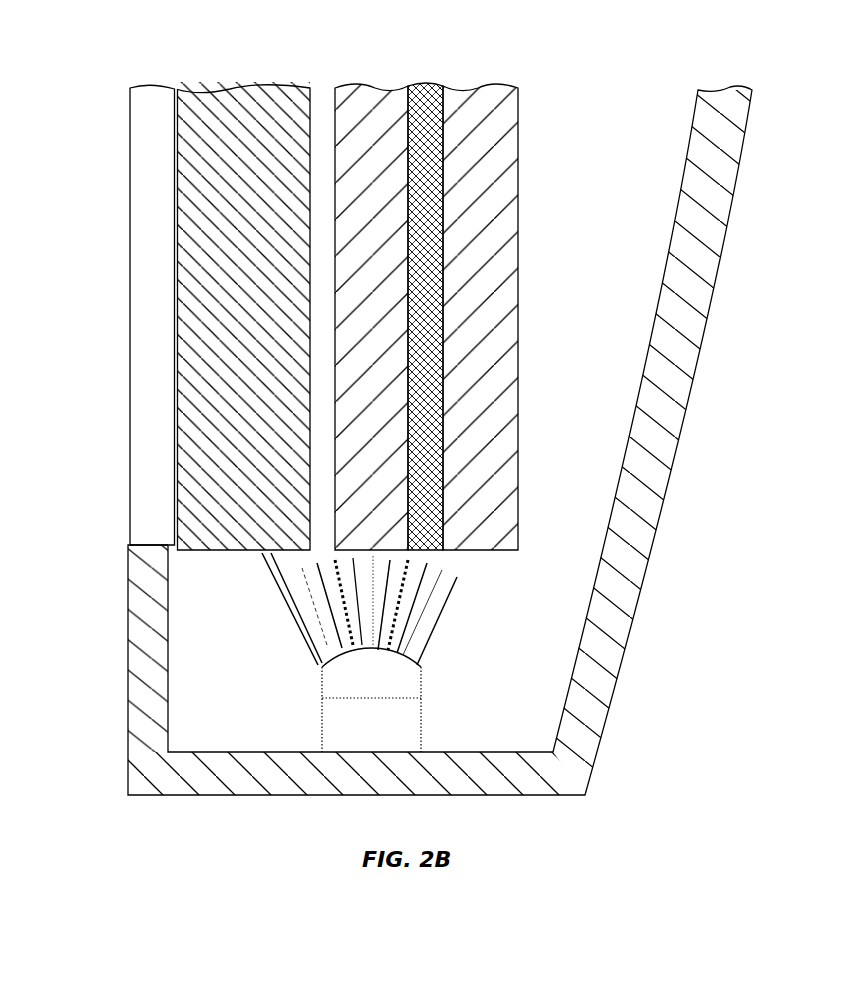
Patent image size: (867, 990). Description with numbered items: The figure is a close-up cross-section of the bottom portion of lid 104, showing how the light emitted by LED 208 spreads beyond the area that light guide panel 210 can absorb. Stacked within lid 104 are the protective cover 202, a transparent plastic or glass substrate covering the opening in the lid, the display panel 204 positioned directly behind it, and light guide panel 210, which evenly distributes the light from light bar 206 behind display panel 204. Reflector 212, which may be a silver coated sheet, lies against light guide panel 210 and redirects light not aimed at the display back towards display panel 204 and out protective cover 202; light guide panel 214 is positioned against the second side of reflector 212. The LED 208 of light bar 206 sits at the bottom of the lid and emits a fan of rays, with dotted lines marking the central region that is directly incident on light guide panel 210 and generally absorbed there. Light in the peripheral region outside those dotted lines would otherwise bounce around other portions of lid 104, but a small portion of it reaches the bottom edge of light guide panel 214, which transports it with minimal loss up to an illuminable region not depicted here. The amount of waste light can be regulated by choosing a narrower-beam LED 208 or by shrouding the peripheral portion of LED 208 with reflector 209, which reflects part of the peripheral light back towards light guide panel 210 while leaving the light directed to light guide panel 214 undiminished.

The lid 104 is at (128, 683).
The protective cover 202 is at (130, 494).
The display panel 204 is at (230, 364).
The light bar 206 is at (291, 668).
The light emitting diode (LED) 208 is at (425, 680).
The reflector 209 is at (290, 613).
The light guide panel 210 is at (357, 364).
The reflector 212 is at (427, 82).
The light guide panel 214 is at (465, 364).